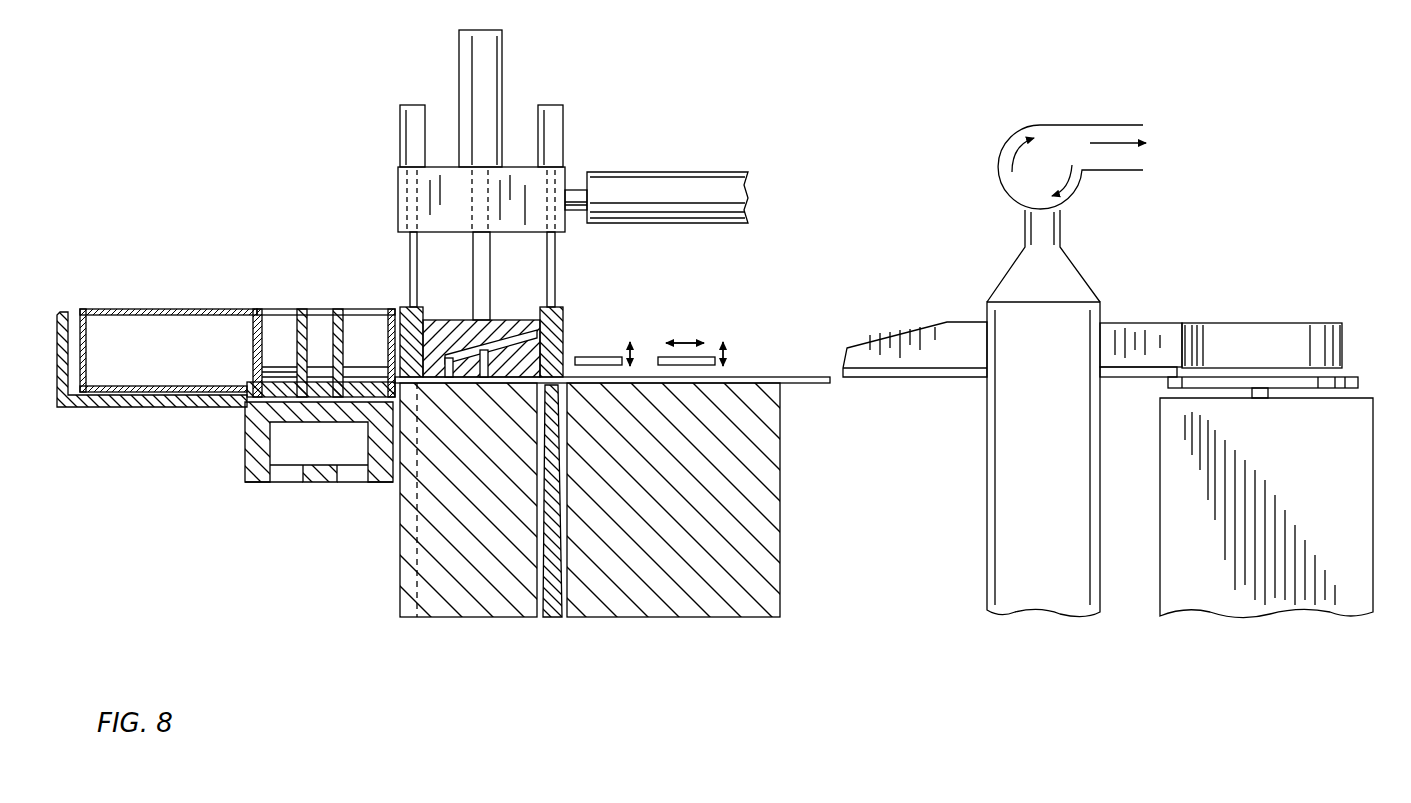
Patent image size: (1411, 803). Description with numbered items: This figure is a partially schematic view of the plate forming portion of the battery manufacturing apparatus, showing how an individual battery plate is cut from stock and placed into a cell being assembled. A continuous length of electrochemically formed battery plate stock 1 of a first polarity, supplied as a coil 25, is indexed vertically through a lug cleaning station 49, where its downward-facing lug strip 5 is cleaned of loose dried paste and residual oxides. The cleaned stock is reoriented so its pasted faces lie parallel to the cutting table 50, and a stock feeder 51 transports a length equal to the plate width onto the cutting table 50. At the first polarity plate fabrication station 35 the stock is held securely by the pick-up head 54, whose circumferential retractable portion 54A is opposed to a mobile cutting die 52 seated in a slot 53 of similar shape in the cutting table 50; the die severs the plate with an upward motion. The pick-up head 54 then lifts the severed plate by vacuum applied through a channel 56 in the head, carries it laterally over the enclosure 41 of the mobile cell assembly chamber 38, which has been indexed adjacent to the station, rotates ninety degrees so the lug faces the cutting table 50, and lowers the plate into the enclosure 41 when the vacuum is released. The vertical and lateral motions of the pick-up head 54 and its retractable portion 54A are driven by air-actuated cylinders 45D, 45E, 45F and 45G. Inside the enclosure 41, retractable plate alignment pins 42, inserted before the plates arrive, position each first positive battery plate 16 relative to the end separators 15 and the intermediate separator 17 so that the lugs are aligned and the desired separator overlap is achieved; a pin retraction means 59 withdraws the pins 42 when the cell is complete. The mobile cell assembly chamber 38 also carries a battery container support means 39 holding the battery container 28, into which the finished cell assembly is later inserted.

The battery plate stock 1 is at (762, 372).
The lug strip 5 is at (1115, 377).
The end separator 15 is at (370, 377).
The first positive battery plate 16 is at (322, 377).
The intermediate separator 17 is at (272, 367).
The coil 25 is at (1235, 330).
The battery container 28 is at (142, 309).
The first polarity plate fabrication station 35 is at (690, 600).
The mobile cell assembly chamber 38 is at (247, 410).
The battery container support means 39 is at (141, 407).
The enclosure 41 is at (276, 336).
The plate alignment pins 42 is at (256, 309).
The air-actuated cylinder 45D is at (410, 130).
The air-actuated cylinder 45E is at (492, 82).
The air-actuated cylinder 45F is at (553, 140).
The air-actuated cylinder 45G is at (665, 182).
The lug cleaning station 49 is at (1103, 296).
The cutting table 50 is at (400, 500).
The stock feeder 51 is at (607, 357).
The mobile cutting die 52 is at (555, 612).
The slot 53 is at (573, 357).
The pick-up head 54 is at (522, 322).
The circumferential retractable portion 54A is at (555, 312).
The channel 56 is at (500, 336).
The pin retraction means 59 is at (245, 482).